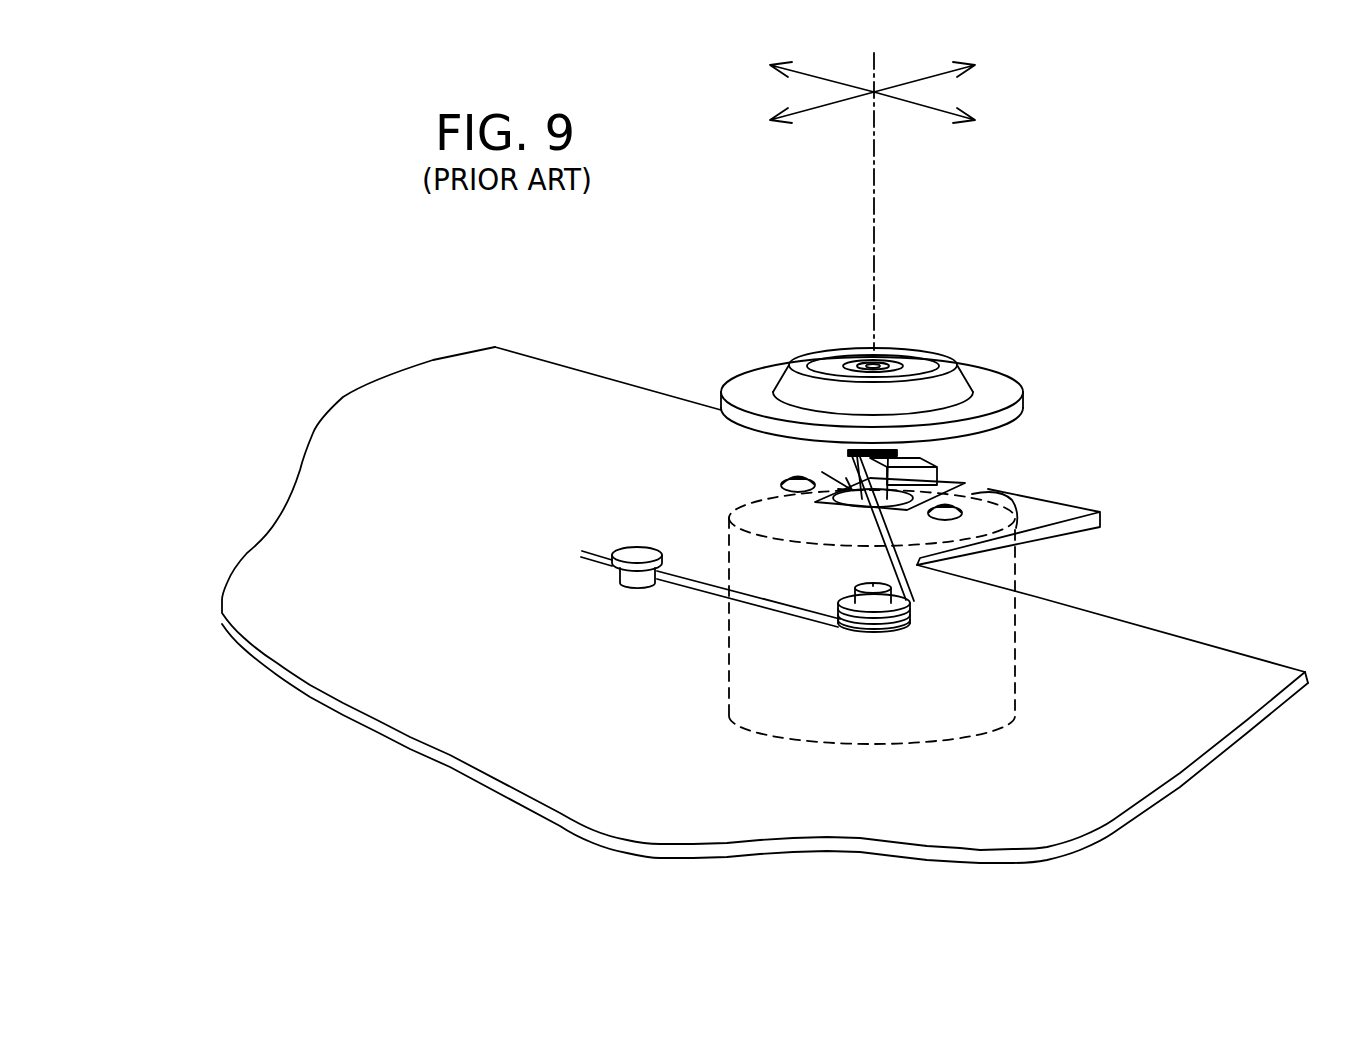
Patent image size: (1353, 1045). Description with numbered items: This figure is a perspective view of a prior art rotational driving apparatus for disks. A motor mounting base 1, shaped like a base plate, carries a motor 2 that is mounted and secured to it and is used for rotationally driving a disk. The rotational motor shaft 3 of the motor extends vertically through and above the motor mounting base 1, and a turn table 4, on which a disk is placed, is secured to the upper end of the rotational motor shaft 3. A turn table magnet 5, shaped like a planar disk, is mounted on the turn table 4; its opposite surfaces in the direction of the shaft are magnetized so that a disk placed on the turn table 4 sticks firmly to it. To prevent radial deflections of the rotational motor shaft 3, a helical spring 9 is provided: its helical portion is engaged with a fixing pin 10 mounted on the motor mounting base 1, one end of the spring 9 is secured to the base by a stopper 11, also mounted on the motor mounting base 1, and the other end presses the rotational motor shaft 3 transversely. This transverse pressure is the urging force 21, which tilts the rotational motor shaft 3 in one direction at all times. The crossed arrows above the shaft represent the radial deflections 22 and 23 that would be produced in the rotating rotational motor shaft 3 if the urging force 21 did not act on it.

The motor mounting base 1 is at (1048, 505).
The motor 2 is at (1000, 570).
The rotational motor shaft 3 is at (900, 468).
The turn table 4 is at (1007, 392).
The turn table magnet 5 is at (915, 360).
The helical spring 9 is at (912, 626).
The fixing pin 10 is at (867, 583).
The stopper 11 is at (635, 550).
The urging force 21 is at (826, 467).
The radial deflection 22 is at (822, 69).
The radial deflection 23 is at (946, 70).